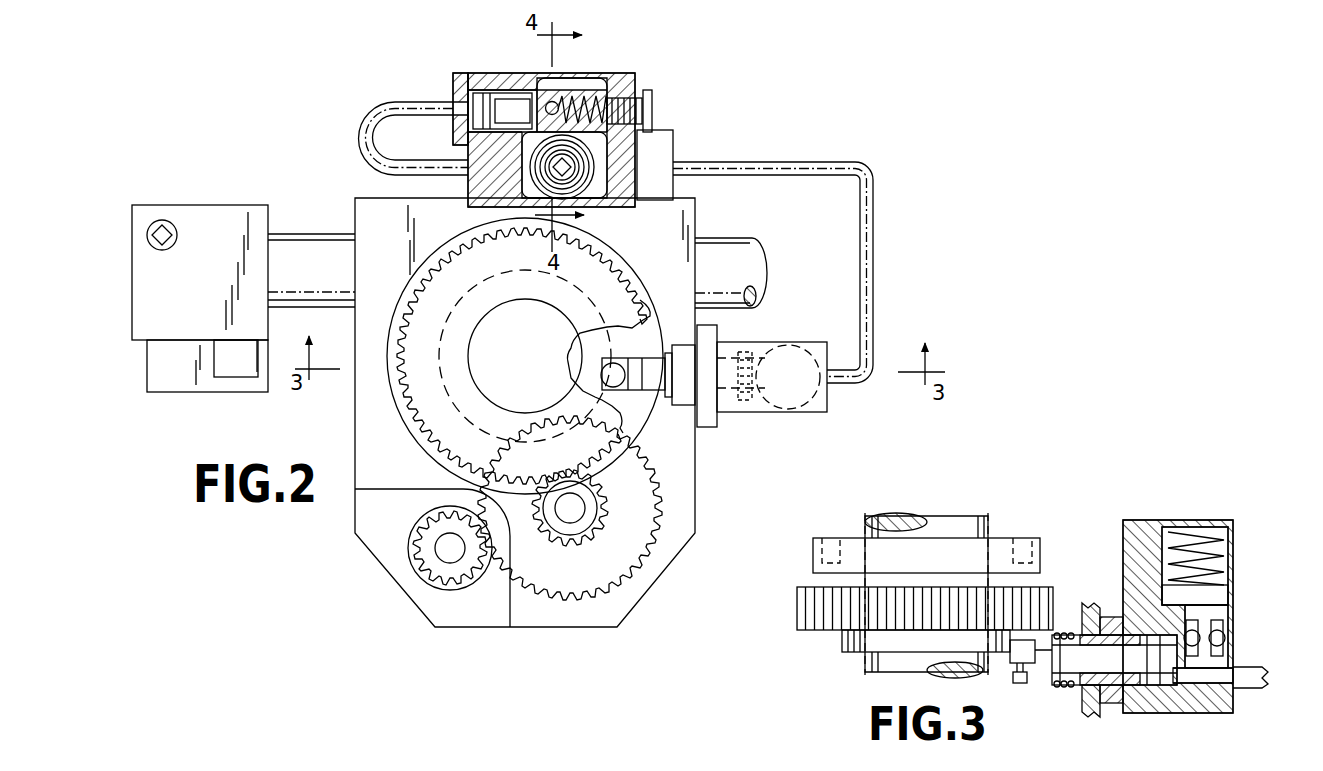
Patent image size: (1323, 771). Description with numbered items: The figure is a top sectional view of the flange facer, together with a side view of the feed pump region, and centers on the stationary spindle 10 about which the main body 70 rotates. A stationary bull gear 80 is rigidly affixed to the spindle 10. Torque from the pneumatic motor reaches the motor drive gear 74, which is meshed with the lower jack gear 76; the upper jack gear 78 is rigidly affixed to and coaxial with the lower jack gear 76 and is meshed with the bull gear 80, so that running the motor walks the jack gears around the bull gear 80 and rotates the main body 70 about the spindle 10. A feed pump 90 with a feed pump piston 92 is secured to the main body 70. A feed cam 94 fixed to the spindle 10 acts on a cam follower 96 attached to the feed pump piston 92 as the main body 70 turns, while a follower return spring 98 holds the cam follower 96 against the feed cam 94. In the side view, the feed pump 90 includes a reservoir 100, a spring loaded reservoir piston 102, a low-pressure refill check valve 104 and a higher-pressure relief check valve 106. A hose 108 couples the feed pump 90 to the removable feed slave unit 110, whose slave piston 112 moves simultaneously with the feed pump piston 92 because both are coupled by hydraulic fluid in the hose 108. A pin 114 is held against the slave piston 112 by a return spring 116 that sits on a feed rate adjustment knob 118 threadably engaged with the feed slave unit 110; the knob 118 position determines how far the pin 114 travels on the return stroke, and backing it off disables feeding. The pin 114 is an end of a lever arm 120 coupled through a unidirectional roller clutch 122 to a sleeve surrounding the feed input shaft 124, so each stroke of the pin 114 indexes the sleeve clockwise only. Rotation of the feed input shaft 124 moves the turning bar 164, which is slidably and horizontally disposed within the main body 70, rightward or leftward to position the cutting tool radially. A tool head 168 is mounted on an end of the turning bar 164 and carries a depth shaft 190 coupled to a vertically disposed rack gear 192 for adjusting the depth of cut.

In FIG. 3, the spindle 10 is at (915, 512).
In FIG. 2, the main body 70 is at (695, 465).
In FIG. 2, the motor drive gear 74 is at (440, 582).
In FIG. 2, the lower jack gear 76 is at (620, 588).
In FIG. 2, the upper jack gear 78 is at (600, 522).
In FIG. 2, the bull gear 80 is at (450, 456).
In FIG. 3, the bull gear 80 is at (797, 605).
In FIG. 2, the feed pump 90 is at (792, 418).
In FIG. 3, the feed pump 90 is at (1118, 549).
In FIG. 2, the feed pump piston 92 is at (741, 412).
In FIG. 3, the feed pump piston 92 is at (1121, 665).
In FIG. 2, the feed cam 94 is at (412, 425).
In FIG. 3, the feed cam 94 is at (858, 652).
In FIG. 2, the cam follower 96 is at (618, 386).
In FIG. 3, the cam follower 96 is at (1012, 655).
In FIG. 3, the follower return spring 98 is at (1072, 688).
In FIG. 3, the reservoir 100 is at (1215, 597).
In FIG. 3, the spring loaded reservoir piston 102 is at (1230, 562).
In FIG. 3, the refill check valve 104 is at (1233, 660).
In FIG. 3, the relief check valve 106 is at (1222, 628).
In FIG. 2, the hose 108 is at (366, 120).
In FIG. 3, the hose 108 is at (1245, 688).
In FIG. 2, the feed slave unit 110 is at (452, 75).
In FIG. 2, the slave piston 112 is at (508, 100).
In FIG. 2, the pin 114 is at (549, 101).
In FIG. 2, the return spring 116 is at (592, 94).
In FIG. 2, the feed rate adjustment knob 118 is at (652, 105).
In FIG. 2, the lever arm 120 is at (470, 146).
In FIG. 2, the roller clutch 122 is at (597, 202).
In FIG. 2, the feed input shaft 124 is at (572, 166).
In FIG. 2, the turning bar 164 is at (342, 233).
In FIG. 2, the tool head 168 is at (270, 204).
In FIG. 2, the depth shaft 190 is at (166, 221).
In FIG. 2, the rack gear 192 is at (237, 372).